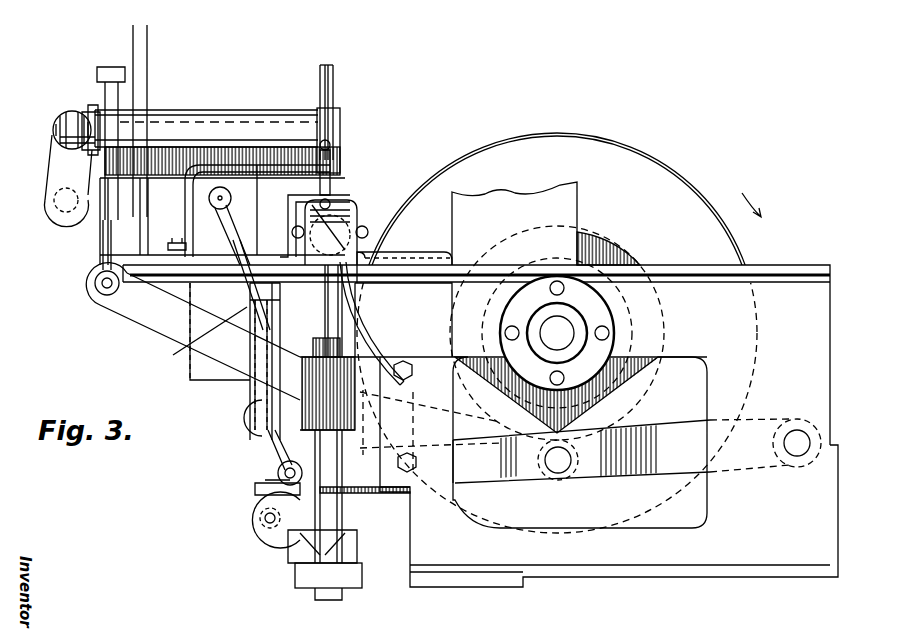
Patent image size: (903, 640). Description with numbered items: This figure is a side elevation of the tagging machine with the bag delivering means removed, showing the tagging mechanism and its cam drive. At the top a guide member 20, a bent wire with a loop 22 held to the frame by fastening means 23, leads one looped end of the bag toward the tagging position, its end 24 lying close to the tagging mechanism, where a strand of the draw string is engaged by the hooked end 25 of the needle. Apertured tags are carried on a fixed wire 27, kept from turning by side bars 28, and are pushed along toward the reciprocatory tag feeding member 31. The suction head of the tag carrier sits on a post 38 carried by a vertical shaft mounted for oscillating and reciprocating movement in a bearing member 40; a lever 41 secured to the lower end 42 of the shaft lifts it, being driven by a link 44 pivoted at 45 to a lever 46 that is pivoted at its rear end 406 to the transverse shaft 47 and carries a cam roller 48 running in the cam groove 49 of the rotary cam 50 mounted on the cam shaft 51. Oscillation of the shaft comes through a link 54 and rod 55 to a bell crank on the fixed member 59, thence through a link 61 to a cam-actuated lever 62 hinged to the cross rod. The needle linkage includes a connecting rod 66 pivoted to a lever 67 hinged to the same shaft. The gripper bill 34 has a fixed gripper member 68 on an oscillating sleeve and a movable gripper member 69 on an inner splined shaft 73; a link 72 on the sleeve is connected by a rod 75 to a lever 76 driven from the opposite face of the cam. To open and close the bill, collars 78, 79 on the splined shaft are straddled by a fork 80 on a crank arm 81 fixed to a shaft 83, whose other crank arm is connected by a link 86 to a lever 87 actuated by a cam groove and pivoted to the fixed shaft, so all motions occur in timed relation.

The guide member 20 is at (228, 150).
The loop 22 is at (157, 277).
The fastening means 23 is at (174, 250).
The end of the guide member 24 is at (333, 160).
The hooked end 25 is at (332, 147).
The fixed wire 27 is at (350, 205).
The side bars 28 is at (298, 232).
The tag feeding member 31 is at (375, 242).
The gripper bill 34 is at (336, 66).
The post 38 is at (337, 303).
The bearing member 40 is at (345, 372).
The lever 41 is at (298, 585).
The lower end of the shaft 42 is at (338, 598).
The link 44 is at (266, 543).
The pivot 45 is at (368, 440).
The lever 46 is at (640, 468).
The transverse shaft 47 is at (800, 443).
The rear end of the lever 406 is at (818, 422).
The cam roller 48 is at (560, 472).
The cam groove 49 is at (636, 386).
The rotary cam 50 is at (658, 176).
The cam shaft 51 is at (552, 330).
The link 54 is at (275, 437).
The rod 55 is at (278, 463).
The fixed member 59 is at (200, 365).
The link 61 is at (255, 510).
The lever 62 is at (253, 522).
The connecting rod 66 is at (281, 317).
The lever 67 is at (245, 416).
The gripper member 68 is at (320, 78).
The gripper member 69 is at (336, 98).
The link 72 is at (127, 73).
The splined shaft 73 is at (55, 128).
The rod 75 is at (100, 236).
The lever 76 is at (146, 323).
The collar 78 is at (62, 142).
The collar 79 is at (93, 112).
The fork 80 is at (82, 104).
The crank arm 81 is at (62, 162).
The shaft 83 is at (46, 210).
The link 86 is at (193, 342).
The lever 87 is at (265, 490).